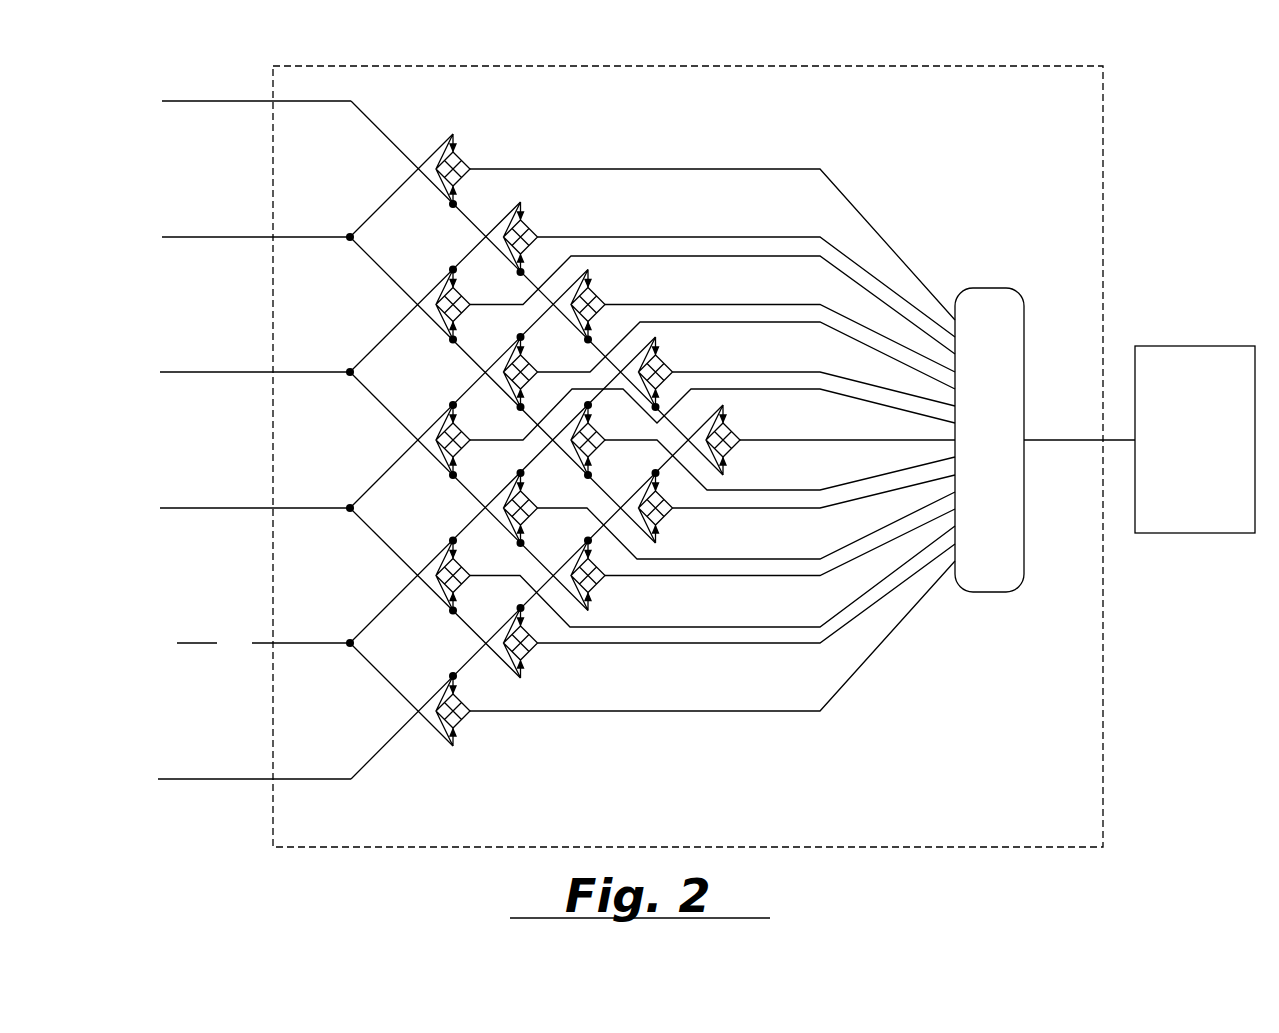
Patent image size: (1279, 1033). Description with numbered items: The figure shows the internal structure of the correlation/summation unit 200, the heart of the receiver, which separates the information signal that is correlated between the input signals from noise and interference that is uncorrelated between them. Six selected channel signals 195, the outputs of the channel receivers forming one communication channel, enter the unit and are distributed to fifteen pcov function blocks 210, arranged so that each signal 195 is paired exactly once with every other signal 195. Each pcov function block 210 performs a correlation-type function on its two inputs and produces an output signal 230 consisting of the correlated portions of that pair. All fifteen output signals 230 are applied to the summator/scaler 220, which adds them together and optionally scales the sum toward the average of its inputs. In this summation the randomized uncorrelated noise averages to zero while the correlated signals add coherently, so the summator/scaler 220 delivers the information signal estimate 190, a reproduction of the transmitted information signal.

The information signal estimate 190 is at (1187, 355).
The selected channel signals 195 is at (165, 811).
The correlation/summation unit 200 is at (1027, 177).
The pcov function block 210 is at (492, 768).
The summator/scaler 220 is at (1008, 530).
The output signal from the pcov function 230 is at (700, 692).